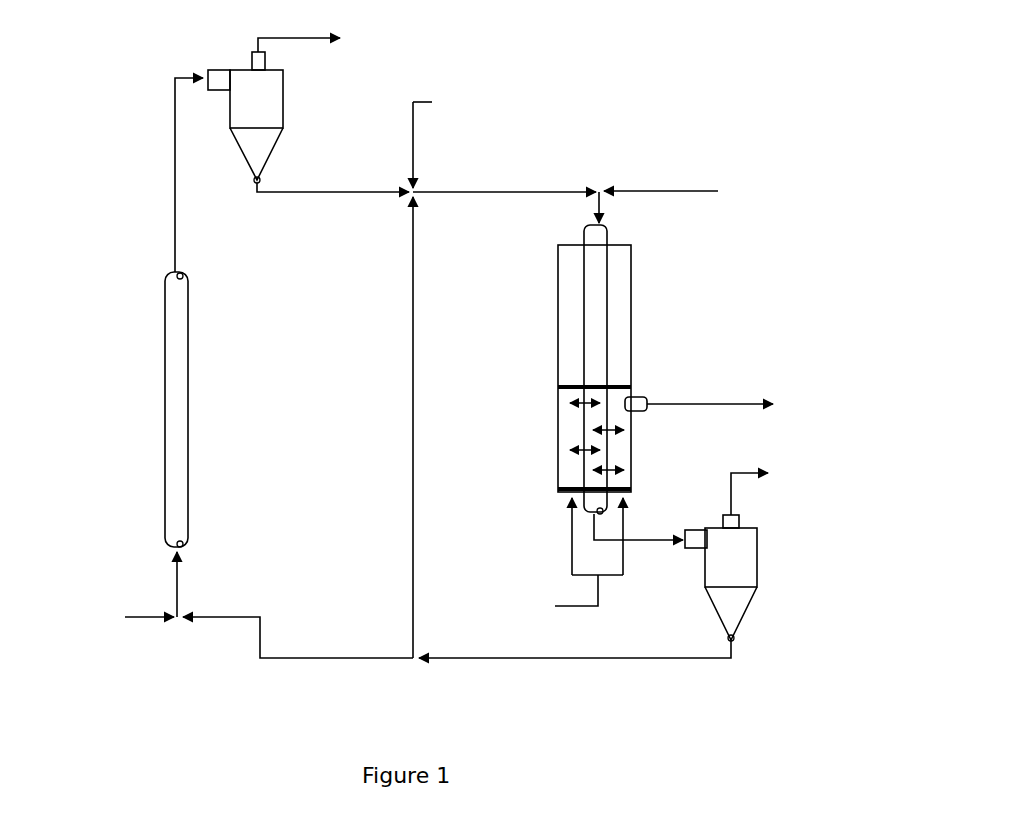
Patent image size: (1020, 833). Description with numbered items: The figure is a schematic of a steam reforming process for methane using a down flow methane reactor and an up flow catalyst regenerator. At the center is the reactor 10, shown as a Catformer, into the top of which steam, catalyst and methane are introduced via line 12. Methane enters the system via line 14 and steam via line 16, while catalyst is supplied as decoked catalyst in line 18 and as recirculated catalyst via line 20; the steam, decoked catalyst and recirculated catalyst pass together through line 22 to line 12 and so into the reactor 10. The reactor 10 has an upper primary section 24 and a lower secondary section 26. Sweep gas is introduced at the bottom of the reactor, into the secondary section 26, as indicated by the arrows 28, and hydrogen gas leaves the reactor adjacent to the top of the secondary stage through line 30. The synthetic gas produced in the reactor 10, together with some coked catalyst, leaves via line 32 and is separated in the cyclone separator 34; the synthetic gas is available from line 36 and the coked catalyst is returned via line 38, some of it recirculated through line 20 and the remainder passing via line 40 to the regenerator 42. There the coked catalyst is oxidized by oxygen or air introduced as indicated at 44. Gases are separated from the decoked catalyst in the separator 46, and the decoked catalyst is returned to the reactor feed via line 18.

The reactor 10 is at (637, 333).
The line 12 is at (611, 207).
The line 14 is at (661, 190).
The line 16 is at (419, 95).
The line 18 is at (302, 186).
The line 20 is at (414, 413).
The line 22 is at (527, 184).
The upper primary section 24 is at (556, 268).
The lower secondary section 26 is at (566, 465).
The arrows 28 is at (566, 542).
The line 30 is at (715, 394).
The line 32 is at (661, 553).
The cyclone separator 34 is at (761, 568).
The line 36 is at (755, 488).
The line 38 is at (671, 663).
The line 40 is at (290, 646).
The regenerator 42 is at (202, 411).
The oxygen or air inlet 44 is at (141, 630).
The separator 46 is at (290, 115).